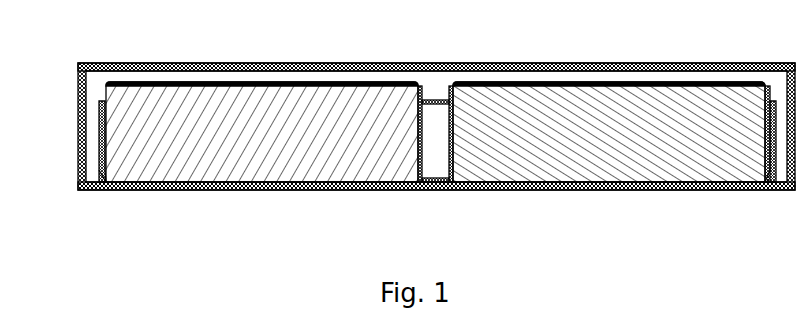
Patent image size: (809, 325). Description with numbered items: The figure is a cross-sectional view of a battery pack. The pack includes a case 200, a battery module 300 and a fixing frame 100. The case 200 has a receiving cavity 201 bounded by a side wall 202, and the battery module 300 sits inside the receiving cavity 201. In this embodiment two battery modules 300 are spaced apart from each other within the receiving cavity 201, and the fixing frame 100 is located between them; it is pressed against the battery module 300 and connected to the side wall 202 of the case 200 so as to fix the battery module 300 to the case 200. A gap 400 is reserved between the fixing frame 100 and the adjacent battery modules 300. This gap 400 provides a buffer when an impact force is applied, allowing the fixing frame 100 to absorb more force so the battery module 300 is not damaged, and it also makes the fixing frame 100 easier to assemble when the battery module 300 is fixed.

The fixing frame 100 is at (428, 83).
The case 200 is at (78, 118).
The receiving cavity 201 is at (727, 78).
The side wall 202 is at (788, 192).
The battery module 300 is at (237, 80).
The gap 400 is at (111, 189).